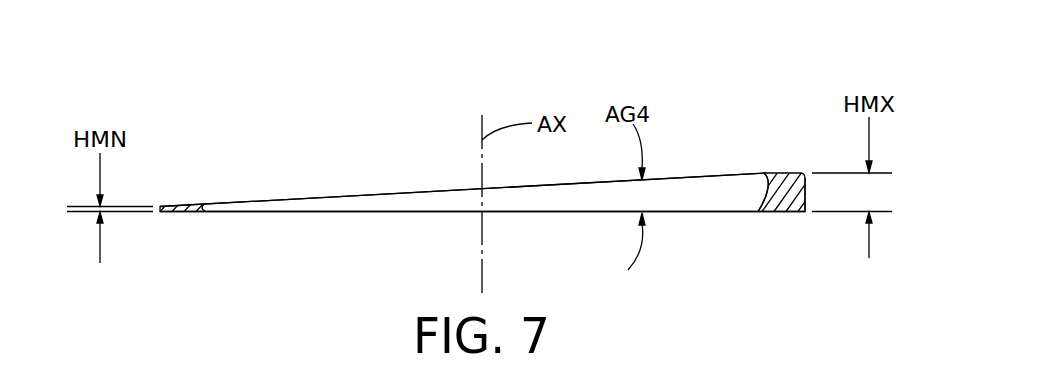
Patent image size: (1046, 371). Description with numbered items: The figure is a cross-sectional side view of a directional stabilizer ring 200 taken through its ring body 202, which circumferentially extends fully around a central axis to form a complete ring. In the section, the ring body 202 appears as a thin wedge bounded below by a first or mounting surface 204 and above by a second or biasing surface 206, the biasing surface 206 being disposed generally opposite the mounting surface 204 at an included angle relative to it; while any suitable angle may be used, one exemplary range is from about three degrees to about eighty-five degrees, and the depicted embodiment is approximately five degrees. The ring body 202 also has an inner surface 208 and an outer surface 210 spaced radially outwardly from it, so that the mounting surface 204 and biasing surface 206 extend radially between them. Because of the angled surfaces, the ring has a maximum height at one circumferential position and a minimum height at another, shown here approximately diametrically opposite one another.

The directional stabilizer ring 200 is at (813, 149).
The ring body 202 is at (787, 183).
The mounting surface 204 is at (343, 212).
The biasing surface 206 is at (343, 197).
The inner surface 208 is at (762, 191).
The outer surface 210 is at (805, 190).